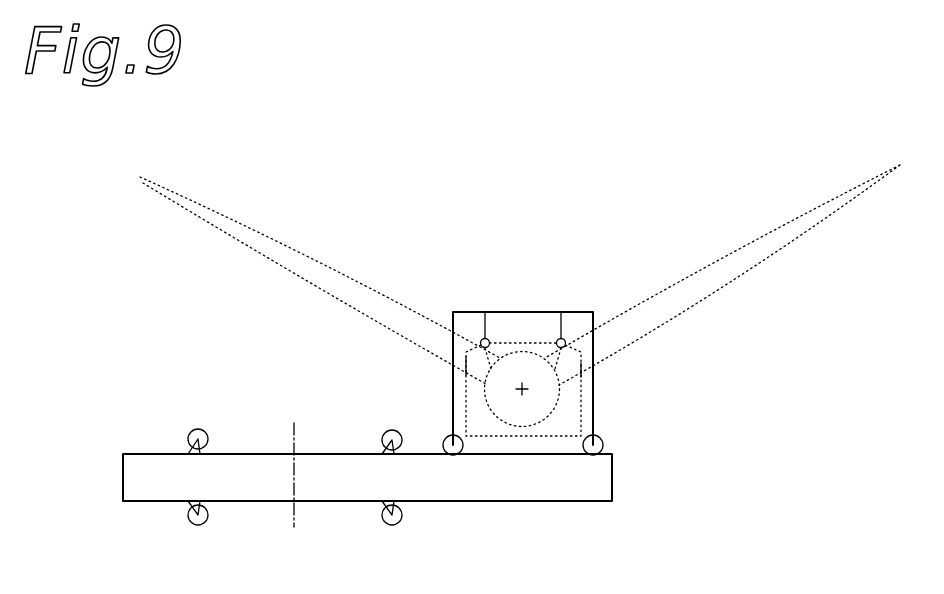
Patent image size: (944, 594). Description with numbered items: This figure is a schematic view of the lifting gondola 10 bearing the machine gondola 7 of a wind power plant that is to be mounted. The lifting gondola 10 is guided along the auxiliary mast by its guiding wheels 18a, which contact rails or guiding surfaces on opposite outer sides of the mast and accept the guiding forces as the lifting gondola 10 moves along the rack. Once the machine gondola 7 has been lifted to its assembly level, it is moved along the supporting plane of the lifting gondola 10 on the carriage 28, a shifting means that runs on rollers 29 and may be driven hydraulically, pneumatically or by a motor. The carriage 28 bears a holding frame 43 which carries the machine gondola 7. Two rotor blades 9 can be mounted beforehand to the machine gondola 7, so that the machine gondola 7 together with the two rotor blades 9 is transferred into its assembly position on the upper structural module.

The rotor blades 9 is at (260, 248).
The holding frame 43 is at (528, 322).
The machine gondola 7 is at (475, 403).
The carriage 28 is at (593, 398).
The rollers 29 is at (603, 438).
The lifting gondola 10 is at (527, 485).
The guiding wheels 18a is at (205, 518).